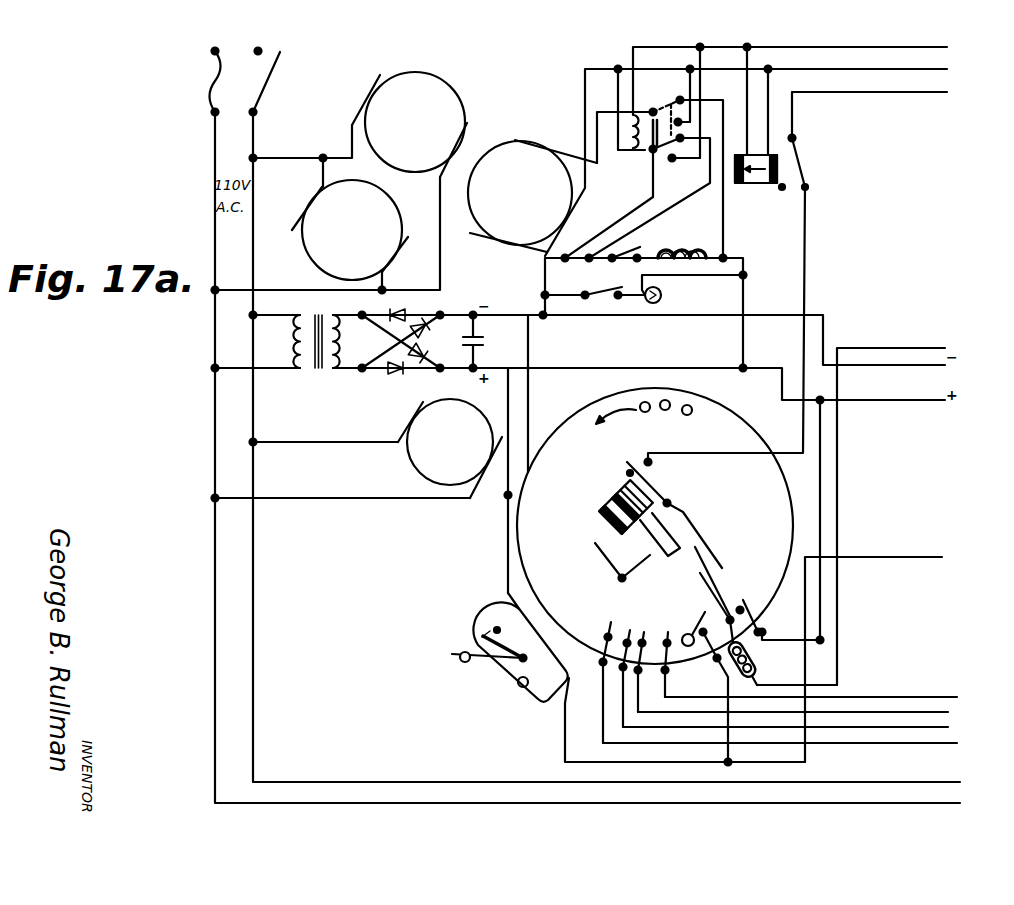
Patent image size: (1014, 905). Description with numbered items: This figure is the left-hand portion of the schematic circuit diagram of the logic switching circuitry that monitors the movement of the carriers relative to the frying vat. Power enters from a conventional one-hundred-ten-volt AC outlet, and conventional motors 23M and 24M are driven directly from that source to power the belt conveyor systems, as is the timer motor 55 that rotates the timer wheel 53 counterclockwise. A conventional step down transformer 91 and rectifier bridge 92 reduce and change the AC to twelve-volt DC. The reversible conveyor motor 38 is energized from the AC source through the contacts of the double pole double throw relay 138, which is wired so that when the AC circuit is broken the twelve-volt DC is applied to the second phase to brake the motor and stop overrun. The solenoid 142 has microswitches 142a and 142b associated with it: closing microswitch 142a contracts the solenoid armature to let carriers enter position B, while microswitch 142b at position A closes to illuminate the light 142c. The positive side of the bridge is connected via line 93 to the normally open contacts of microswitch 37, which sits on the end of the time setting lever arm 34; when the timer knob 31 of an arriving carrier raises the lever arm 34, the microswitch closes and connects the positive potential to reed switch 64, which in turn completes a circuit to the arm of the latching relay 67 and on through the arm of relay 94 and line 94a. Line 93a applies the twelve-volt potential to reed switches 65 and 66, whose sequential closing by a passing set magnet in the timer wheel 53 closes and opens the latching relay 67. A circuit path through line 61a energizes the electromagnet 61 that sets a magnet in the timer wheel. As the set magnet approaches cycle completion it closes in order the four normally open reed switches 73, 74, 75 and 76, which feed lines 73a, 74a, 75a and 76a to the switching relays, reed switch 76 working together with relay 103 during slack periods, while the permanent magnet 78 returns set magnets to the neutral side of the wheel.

The conventional motor 23M is at (438, 134).
The conventional motor 24M is at (374, 242).
The reversible gear head motor 38 is at (534, 204).
The double pole double throw relay 138 is at (651, 147).
The solenoid 142 is at (660, 252).
The microswitch 142a is at (570, 254).
The microswitch 142b is at (602, 288).
The light 142c is at (661, 295).
The relay 94 is at (752, 185).
The line 94a is at (890, 93).
The line 61a is at (868, 348).
The step down transformer 91 is at (306, 372).
The rectifier bridge 92 is at (366, 369).
The timer motor 55 is at (464, 452).
The line 93 is at (508, 548).
The timer wheel 53 is at (578, 428).
The line 93a is at (822, 468).
The latching relay 67 is at (622, 497).
The reed switch 65 is at (733, 604).
The reed switch 66 is at (760, 627).
The electromagnet 61 is at (762, 666).
The reed switch 64 is at (714, 658).
The permanent magnet 78 is at (686, 634).
The reed switch 73 is at (604, 652).
The reed switch 74 is at (634, 640).
The reed switch 75 is at (648, 668).
The reed switch 76 is at (672, 668).
The line 73a is at (950, 742).
The line 74a is at (950, 727).
The line 75a is at (950, 712).
The line 76a is at (944, 696).
The relay 103 is at (924, 561).
The time setting lever arm 34 is at (476, 614).
The microswitch 37 is at (505, 644).
The timer knob 31 is at (452, 658).